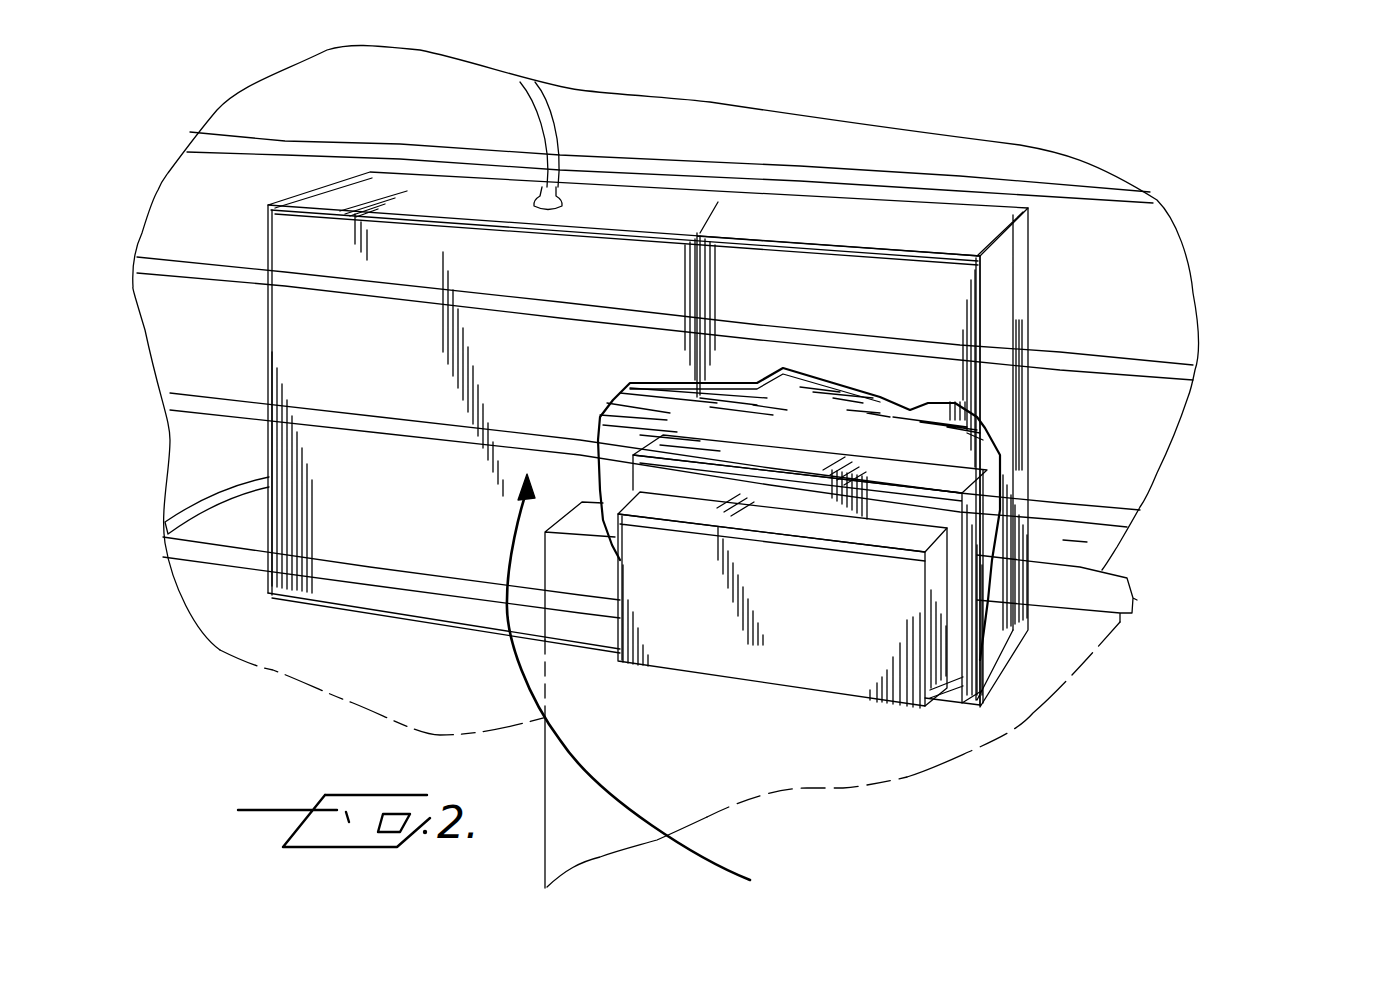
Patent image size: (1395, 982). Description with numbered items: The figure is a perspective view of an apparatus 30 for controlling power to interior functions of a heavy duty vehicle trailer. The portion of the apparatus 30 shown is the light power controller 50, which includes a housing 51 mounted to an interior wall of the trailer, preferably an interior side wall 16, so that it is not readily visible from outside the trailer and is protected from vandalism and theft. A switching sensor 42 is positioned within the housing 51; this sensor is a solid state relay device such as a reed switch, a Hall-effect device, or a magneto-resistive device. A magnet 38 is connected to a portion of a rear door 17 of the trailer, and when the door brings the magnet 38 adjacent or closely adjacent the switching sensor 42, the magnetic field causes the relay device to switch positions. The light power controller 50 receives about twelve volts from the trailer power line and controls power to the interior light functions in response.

The apparatus 30 is at (1097, 132).
The light power controller 50 is at (1003, 212).
The housing 51 is at (890, 308).
The switching sensor 42 is at (953, 470).
The magnet 38 is at (852, 653).
The interior side wall 16 is at (1158, 308).
The rear door 17 is at (1135, 598).